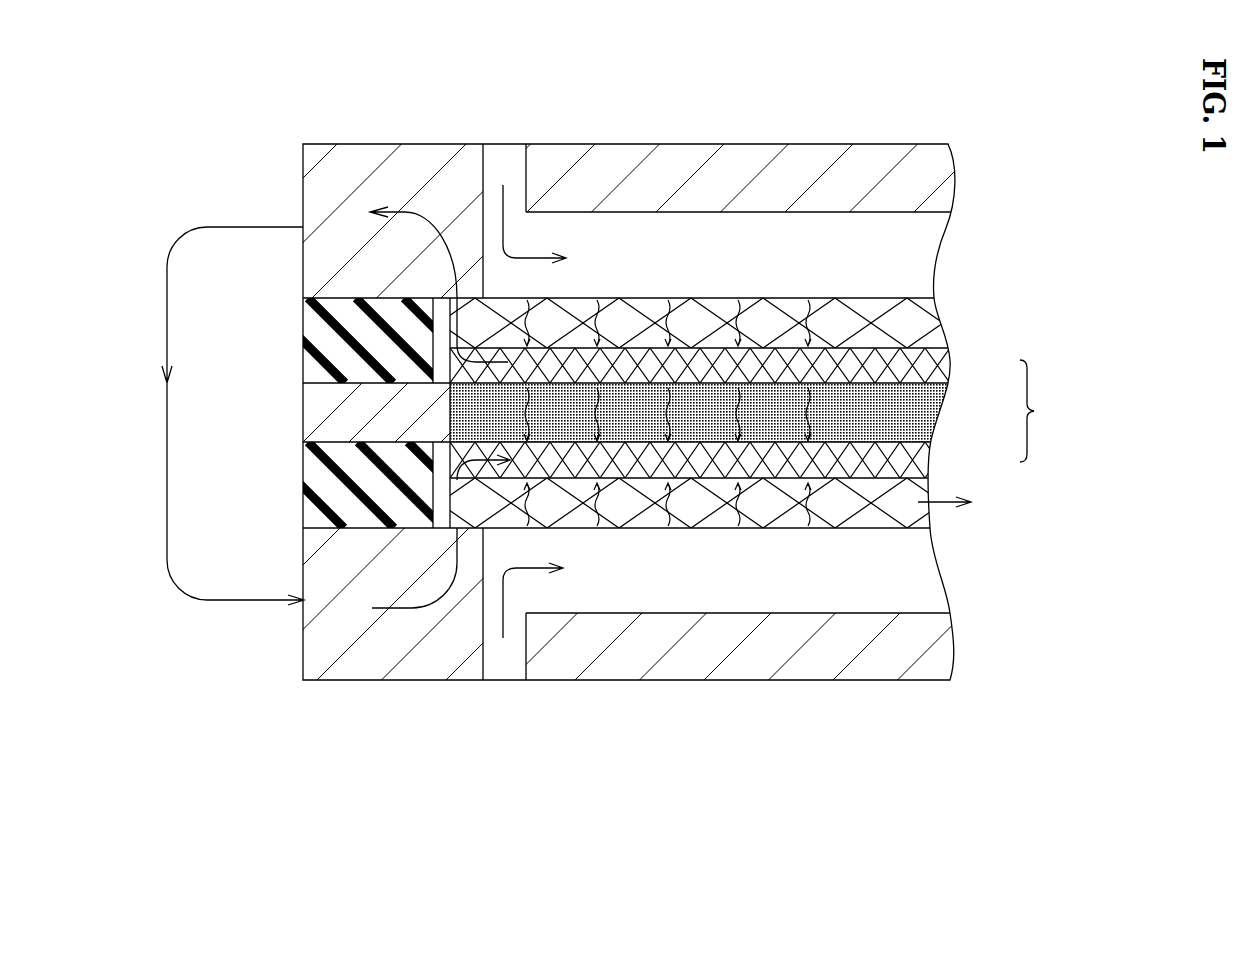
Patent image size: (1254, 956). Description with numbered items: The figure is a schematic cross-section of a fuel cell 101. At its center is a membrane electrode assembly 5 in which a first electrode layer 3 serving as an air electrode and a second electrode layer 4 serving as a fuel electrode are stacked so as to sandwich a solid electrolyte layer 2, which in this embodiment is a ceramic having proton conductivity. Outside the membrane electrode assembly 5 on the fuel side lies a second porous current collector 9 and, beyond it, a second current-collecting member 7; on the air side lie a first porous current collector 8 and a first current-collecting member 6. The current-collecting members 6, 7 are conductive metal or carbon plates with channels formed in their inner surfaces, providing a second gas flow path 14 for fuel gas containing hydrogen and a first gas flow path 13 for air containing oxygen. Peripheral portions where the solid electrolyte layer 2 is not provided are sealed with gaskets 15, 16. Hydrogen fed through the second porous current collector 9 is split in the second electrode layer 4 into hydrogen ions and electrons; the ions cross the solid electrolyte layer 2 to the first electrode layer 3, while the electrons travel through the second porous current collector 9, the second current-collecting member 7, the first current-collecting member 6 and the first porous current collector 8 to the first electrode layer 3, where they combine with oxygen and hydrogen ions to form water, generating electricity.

The fuel cell 101 is at (789, 111).
The second current-collecting member 7 is at (958, 178).
The first current-collecting member 6 is at (955, 642).
The second gas flow path 14 is at (690, 240).
The first gas flow path 13 is at (637, 595).
The second porous current collector 9 is at (937, 322).
The second electrode layer 4 is at (950, 367).
The solid electrolyte layer 2 is at (942, 418).
The first electrode layer 3 is at (935, 456).
The first porous current collector 8 is at (930, 517).
The membrane electrode assembly 5 is at (709, 414).
The gasket 16 is at (303, 337).
The gasket 15 is at (303, 478).